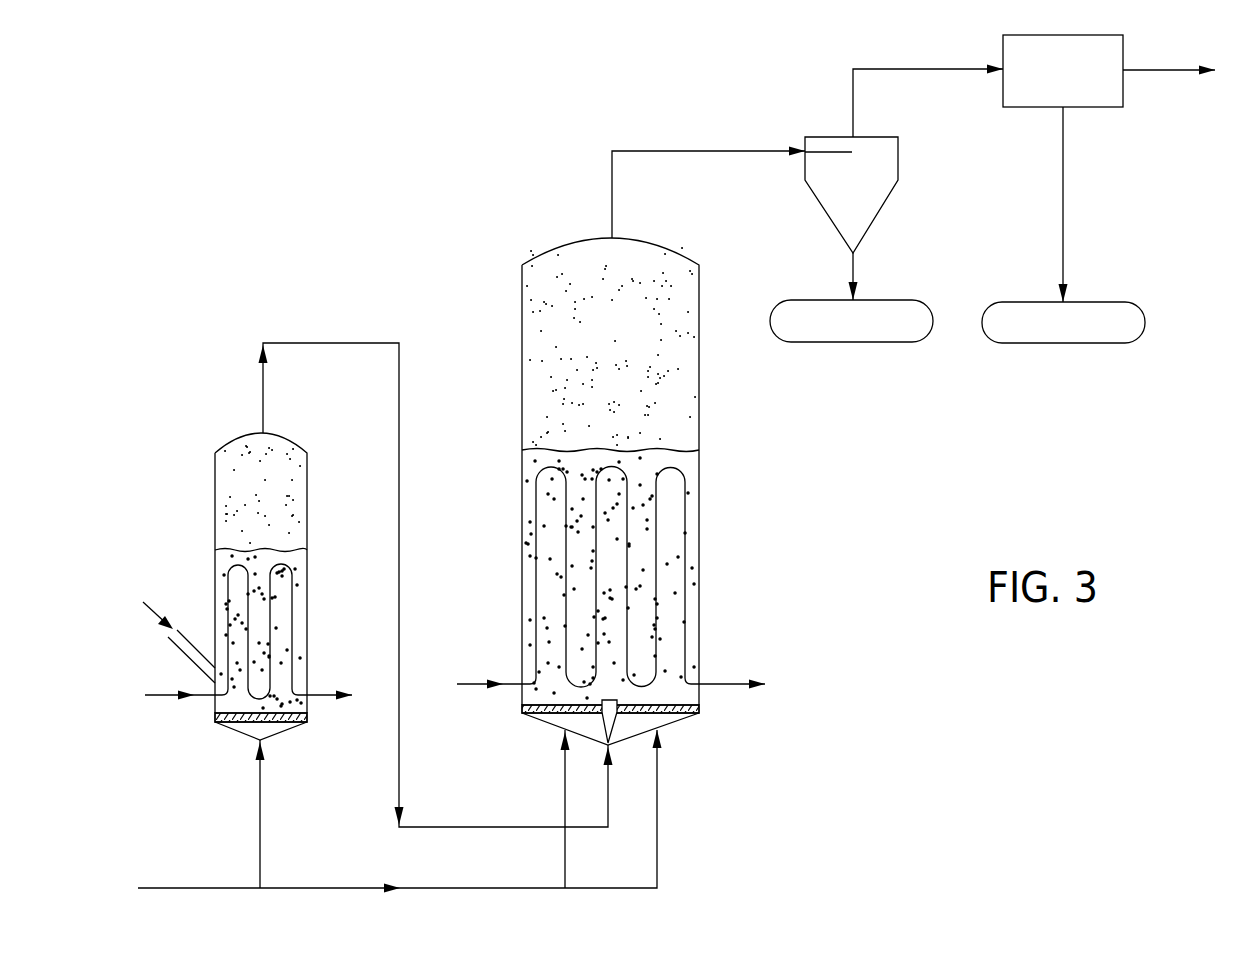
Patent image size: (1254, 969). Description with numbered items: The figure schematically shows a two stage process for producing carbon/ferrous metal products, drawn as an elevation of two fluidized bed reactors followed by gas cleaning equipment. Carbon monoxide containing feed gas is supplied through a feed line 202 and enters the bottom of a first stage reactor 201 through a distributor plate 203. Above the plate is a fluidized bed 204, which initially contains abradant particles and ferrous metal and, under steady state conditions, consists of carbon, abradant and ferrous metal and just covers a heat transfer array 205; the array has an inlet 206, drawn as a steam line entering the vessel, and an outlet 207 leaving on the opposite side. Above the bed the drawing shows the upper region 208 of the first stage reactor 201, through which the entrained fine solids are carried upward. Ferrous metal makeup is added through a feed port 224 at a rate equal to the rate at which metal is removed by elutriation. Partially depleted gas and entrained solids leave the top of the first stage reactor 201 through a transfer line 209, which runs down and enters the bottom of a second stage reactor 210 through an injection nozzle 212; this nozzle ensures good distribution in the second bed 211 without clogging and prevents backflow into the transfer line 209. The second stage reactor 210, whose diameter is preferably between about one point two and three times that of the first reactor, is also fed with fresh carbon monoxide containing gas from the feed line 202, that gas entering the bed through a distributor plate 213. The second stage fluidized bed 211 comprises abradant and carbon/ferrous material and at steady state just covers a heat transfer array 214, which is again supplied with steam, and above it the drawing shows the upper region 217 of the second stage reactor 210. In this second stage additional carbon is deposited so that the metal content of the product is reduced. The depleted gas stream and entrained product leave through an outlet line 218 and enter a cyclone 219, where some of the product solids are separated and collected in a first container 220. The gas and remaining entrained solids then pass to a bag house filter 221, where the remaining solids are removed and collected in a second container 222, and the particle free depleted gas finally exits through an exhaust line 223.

The first stage reactor 201 is at (314, 515).
The feed line 202 is at (222, 888).
The distributor plate 203 is at (287, 723).
The fluidized bed 204 is at (283, 617).
The heat transfer array 205 is at (215, 572).
The inlet 206 is at (215, 697).
The outlet 207 is at (318, 695).
The freeboard zone of first reactor 208 is at (288, 455).
The transfer line 209 is at (333, 343).
The second stage reactor 210 is at (712, 443).
The second stage fluidized bed 211 is at (675, 637).
The injection nozzle 212 is at (613, 730).
The distributor plate 213 is at (699, 710).
The heat transfer array 214 is at (536, 533).
The freeboard zone of second reactor 217 is at (665, 422).
The outlet line 218 is at (698, 151).
The cyclone 219 is at (898, 150).
The first container 220 is at (872, 300).
The bag house filter 221 is at (1123, 55).
The second container 222 is at (1086, 302).
The exhaust line 223 is at (1140, 70).
The feed port 224 is at (183, 655).